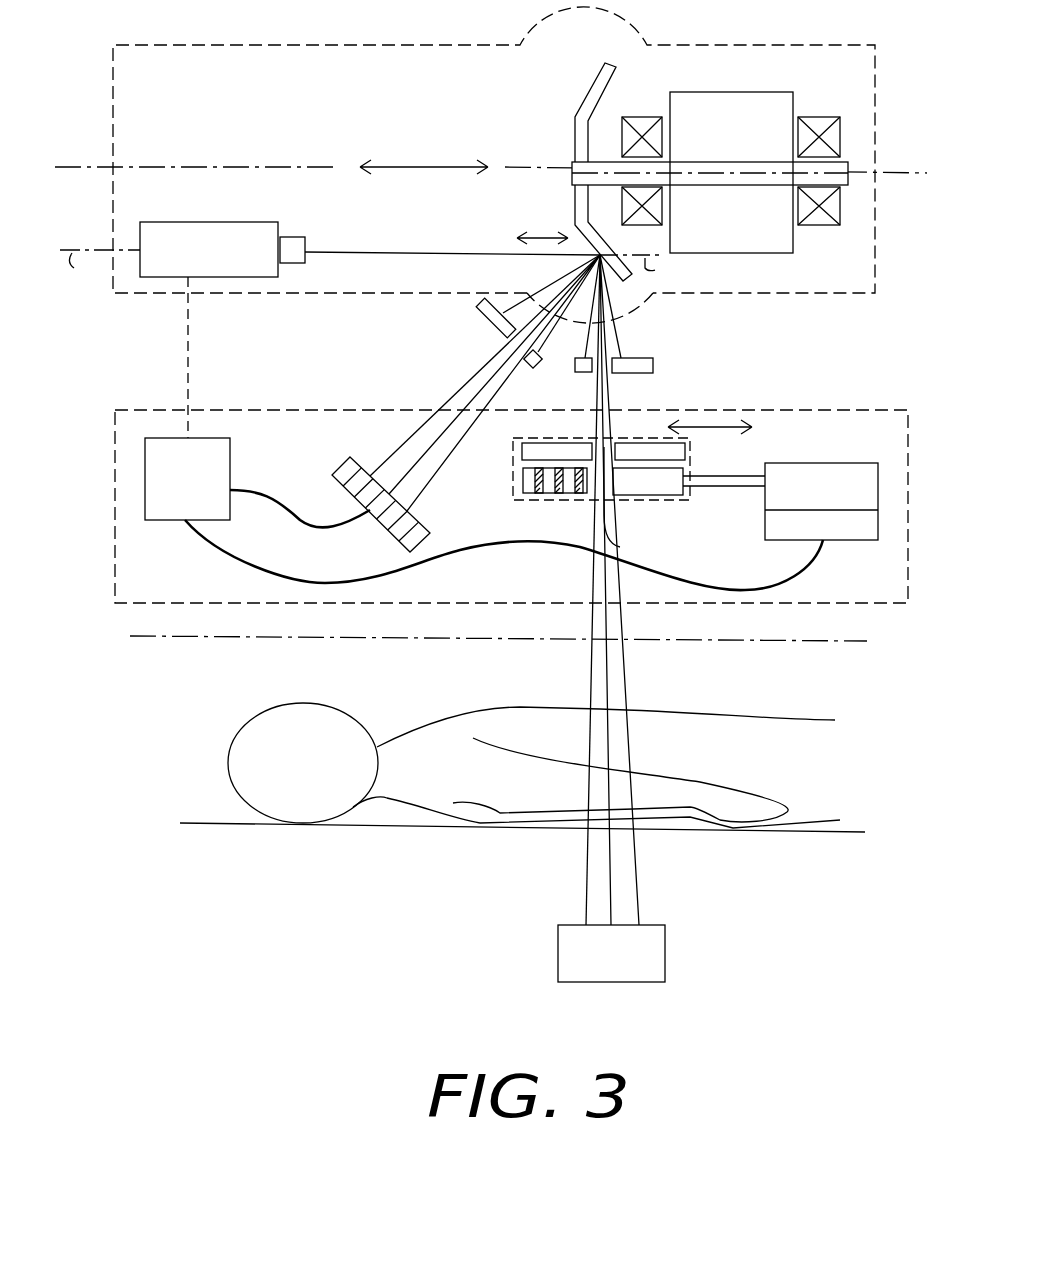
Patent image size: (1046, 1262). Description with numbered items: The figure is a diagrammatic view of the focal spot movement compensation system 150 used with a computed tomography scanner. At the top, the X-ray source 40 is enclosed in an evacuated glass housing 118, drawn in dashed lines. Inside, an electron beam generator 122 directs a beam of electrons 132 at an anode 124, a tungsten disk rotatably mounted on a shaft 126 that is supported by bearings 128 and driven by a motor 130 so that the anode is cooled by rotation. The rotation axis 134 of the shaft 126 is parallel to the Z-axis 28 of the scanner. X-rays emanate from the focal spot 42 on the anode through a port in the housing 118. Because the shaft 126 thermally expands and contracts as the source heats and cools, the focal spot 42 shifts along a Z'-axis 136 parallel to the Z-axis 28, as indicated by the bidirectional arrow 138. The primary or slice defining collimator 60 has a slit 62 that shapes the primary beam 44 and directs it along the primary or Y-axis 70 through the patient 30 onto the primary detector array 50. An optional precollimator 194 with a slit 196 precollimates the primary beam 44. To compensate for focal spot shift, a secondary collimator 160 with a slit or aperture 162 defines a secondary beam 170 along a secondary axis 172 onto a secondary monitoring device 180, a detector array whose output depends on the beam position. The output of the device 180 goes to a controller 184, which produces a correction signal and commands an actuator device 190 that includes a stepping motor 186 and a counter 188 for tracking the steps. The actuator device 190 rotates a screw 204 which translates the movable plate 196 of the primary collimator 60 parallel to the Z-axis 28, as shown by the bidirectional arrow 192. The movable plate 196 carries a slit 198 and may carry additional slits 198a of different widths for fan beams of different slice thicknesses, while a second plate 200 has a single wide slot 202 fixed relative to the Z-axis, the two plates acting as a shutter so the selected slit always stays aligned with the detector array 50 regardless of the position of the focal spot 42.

The evacuated housing 118 is at (333, 46).
The X-ray source 40 is at (509, 173).
The focal spot 42 is at (644, 316).
The rotation axis 134 is at (80, 160).
The Z'-axis 136 is at (88, 248).
The electron beam generator 122 is at (223, 259).
The electron beam 132 is at (404, 252).
The anode 124 is at (575, 121).
The shaft 126 is at (572, 164).
The bearings 128 is at (642, 117).
The motor 130 is at (749, 136).
The bidirectional arrow 138 is at (547, 232).
The secondary collimator 160 is at (477, 310).
The slit or aperture 162 is at (512, 340).
The secondary beam 170 is at (485, 365).
The secondary axis 172 is at (478, 393).
The movable plate 196 is at (594, 374).
The precollimator 194 is at (654, 366).
The focal spot movement compensation system 150 is at (856, 412).
The control system 184 is at (201, 495).
The secondary monitoring device 180 is at (402, 521).
The primary collimator 60 is at (660, 503).
The second plate 200 is at (514, 440).
The additional slit 198a is at (539, 494).
The slit 198 is at (613, 481).
The slot 202 is at (607, 450).
The screw 204 is at (707, 480).
The bidirectional arrow 192 is at (704, 426).
The actuator device 190 is at (531, 513).
The stepping motor 186 is at (834, 509).
The counter 188 is at (837, 543).
The primary beam 44 is at (591, 652).
The Y-axis 70 is at (606, 678).
The slit 62 is at (620, 547).
The Z-axis 28 is at (168, 633).
The patient 30 is at (513, 728).
The primary detector array 50 is at (625, 962).